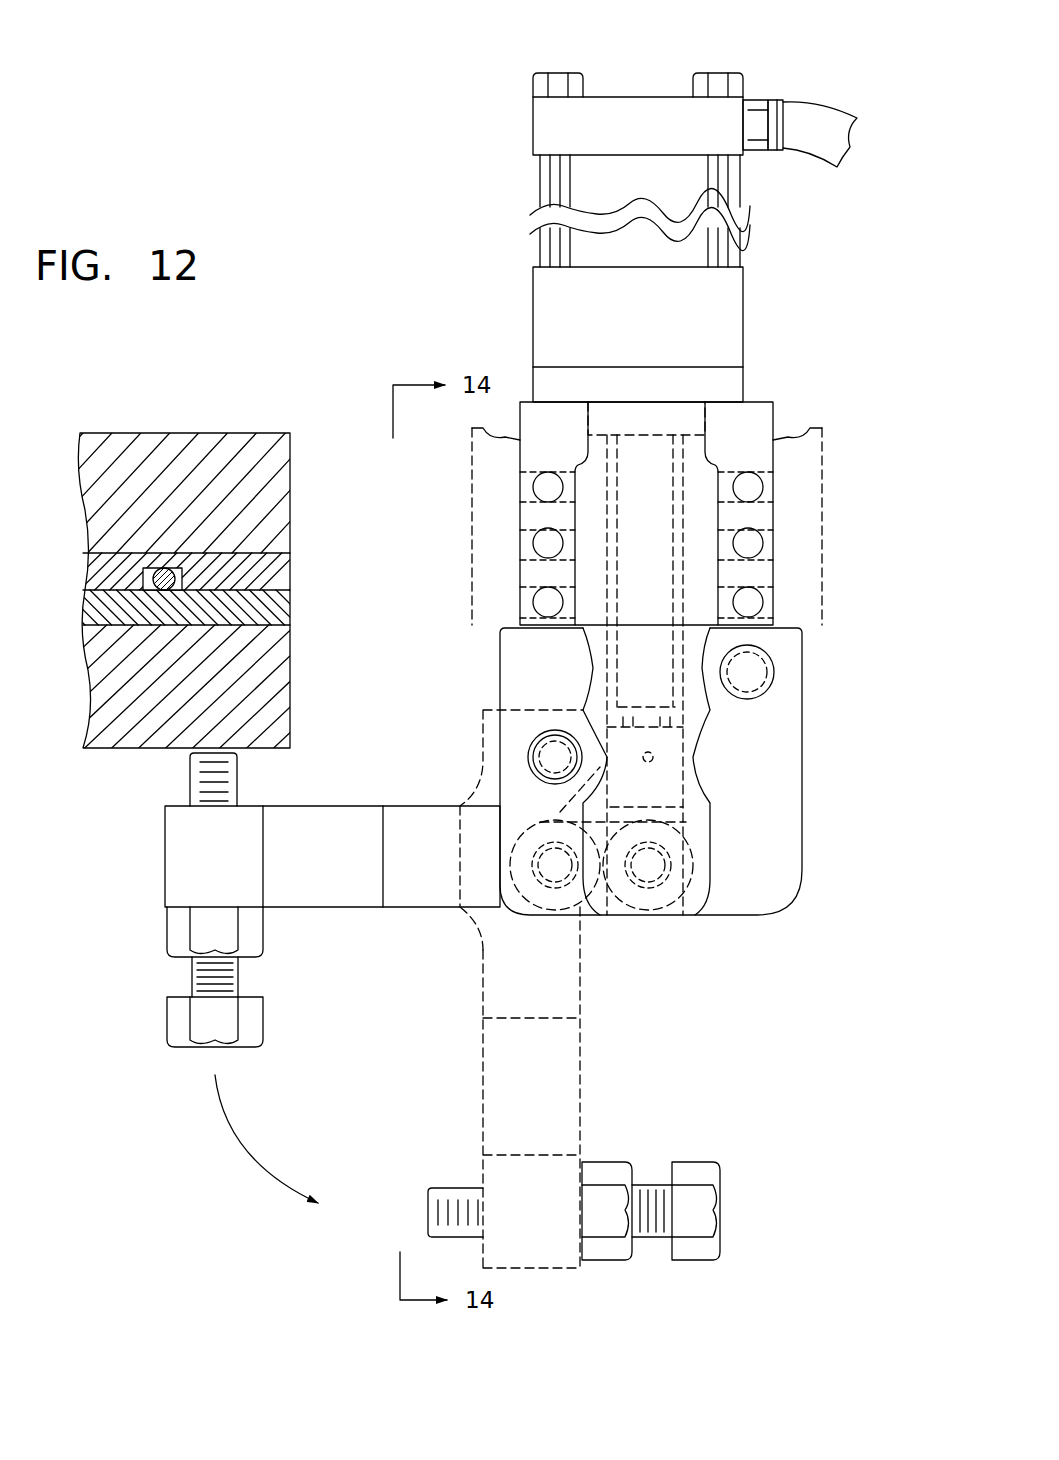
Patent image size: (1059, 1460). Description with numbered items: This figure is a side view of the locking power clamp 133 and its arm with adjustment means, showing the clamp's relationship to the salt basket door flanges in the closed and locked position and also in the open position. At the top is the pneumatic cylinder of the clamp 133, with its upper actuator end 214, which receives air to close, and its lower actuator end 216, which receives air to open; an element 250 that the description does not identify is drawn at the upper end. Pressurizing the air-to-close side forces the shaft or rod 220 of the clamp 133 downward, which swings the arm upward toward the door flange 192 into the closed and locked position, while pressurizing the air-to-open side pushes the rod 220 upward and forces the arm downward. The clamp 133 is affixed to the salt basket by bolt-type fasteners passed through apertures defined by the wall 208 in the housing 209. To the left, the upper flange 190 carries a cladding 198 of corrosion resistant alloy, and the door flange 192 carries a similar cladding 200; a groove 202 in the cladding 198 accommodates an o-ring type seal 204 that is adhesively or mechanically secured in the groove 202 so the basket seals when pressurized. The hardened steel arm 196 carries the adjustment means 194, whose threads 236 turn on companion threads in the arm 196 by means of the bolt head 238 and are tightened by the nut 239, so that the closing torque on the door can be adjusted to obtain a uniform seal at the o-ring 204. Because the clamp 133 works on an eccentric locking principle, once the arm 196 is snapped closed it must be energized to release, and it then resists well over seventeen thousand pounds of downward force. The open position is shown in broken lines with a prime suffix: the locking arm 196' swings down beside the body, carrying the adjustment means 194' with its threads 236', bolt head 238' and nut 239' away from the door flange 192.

The clamp 133 is at (405, 258).
The upper actuator end 214 is at (535, 147).
The air supply fitting and hose 250 is at (805, 110).
The lower actuator end 216 is at (543, 350).
The housing 209 is at (775, 420).
The wall 208 is at (548, 487).
The shaft or rod 220 is at (665, 693).
The upper flange 190 is at (287, 483).
The cladding 198 is at (287, 572).
The cladding 200 is at (287, 613).
The groove 202 is at (185, 578).
The o-ring type seal 204 is at (157, 570).
The door flange 192 is at (287, 685).
The adjustment means 194 is at (268, 779).
The arm 196 is at (374, 836).
The nut 239 is at (262, 939).
The threads 236 is at (276, 985).
The bolt head 238 is at (264, 1034).
The locking arm (open position) 196' is at (591, 1087).
The adjustment means (open position) 194' is at (423, 1180).
The nut (open position) 239' is at (653, 1151).
The threads (open position) 236' is at (697, 1165).
The bolt head (open position) 238' is at (762, 1193).